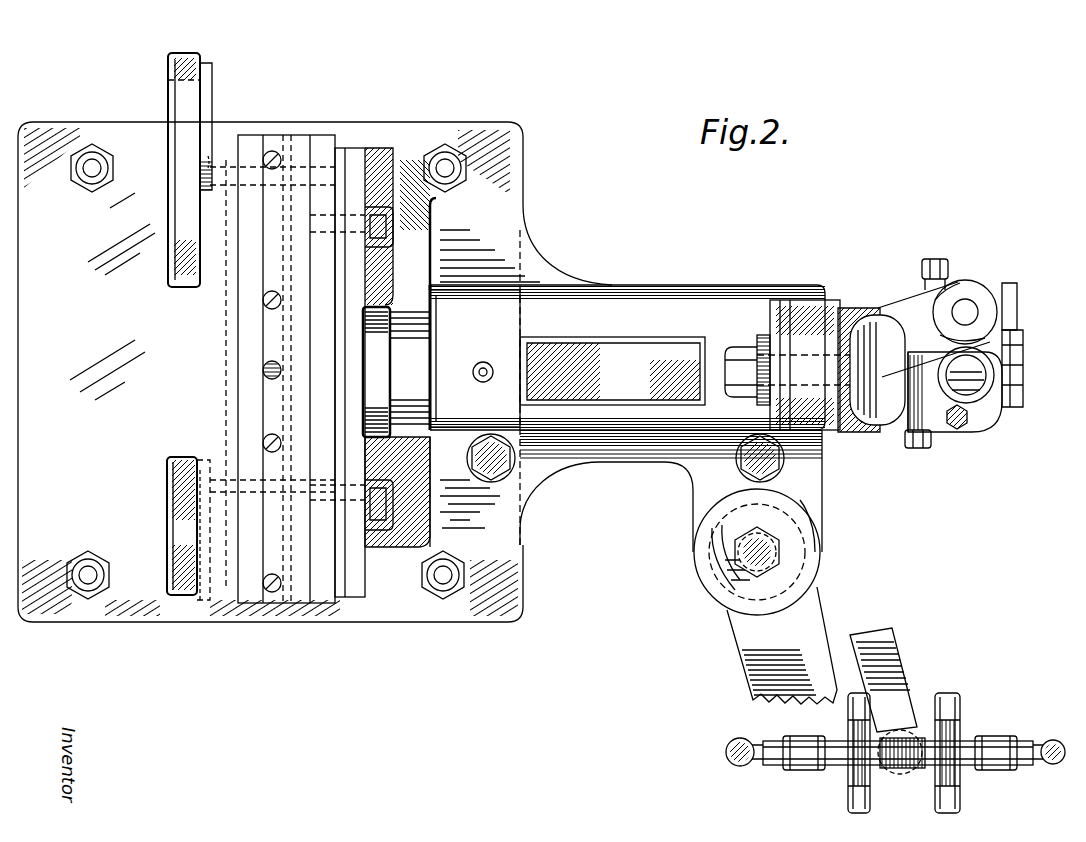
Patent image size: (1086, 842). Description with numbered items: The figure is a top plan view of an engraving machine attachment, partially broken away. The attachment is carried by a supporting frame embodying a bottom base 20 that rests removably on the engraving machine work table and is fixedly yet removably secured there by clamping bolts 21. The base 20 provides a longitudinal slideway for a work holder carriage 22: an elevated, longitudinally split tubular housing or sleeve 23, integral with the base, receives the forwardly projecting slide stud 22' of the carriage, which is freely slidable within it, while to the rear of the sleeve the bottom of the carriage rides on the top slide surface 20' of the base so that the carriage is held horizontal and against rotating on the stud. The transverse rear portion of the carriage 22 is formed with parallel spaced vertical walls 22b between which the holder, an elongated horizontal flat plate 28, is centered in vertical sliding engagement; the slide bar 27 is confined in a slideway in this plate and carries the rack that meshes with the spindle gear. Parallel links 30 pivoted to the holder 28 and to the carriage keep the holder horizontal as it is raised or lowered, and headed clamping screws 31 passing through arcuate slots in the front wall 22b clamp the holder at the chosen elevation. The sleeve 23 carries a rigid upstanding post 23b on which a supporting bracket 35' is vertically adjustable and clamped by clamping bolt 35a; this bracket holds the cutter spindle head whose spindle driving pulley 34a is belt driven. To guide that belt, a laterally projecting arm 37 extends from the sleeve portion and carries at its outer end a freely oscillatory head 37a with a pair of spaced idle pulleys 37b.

The bottom base 20 is at (270, 395).
The top slide surface 20' is at (518, 371).
The clamping bolts 21 is at (446, 150).
The work holder carriage 22 is at (156, 324).
The vertical walls 22b is at (390, 548).
The slide stud 22' is at (469, 357).
The tubular housing or sleeve 23 is at (627, 372).
The upstanding post 23b is at (808, 315).
The slide bar 27 is at (281, 370).
The holder plate 28 is at (325, 140).
The parallel links 30 is at (247, 140).
The clamping screws 31 is at (385, 215).
The spindle driving pulley 34a is at (1002, 415).
The clamping bolt 35a is at (745, 355).
The supporting bracket 35' is at (917, 342).
The laterally projecting arm 37 is at (745, 578).
The head 37a is at (895, 772).
The idle pulleys 37b is at (948, 695).